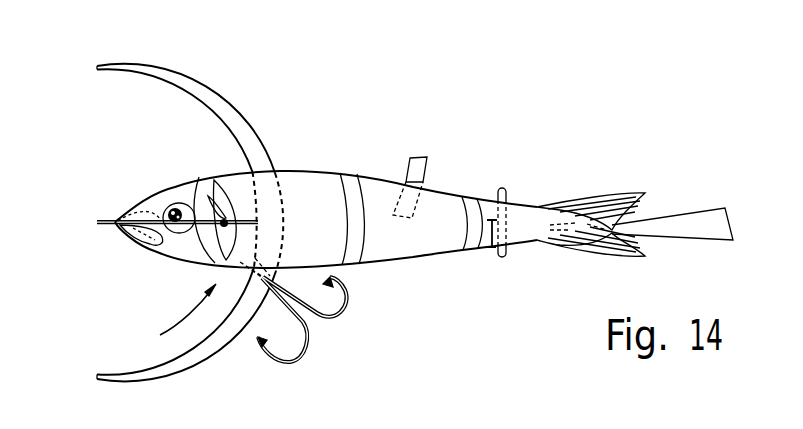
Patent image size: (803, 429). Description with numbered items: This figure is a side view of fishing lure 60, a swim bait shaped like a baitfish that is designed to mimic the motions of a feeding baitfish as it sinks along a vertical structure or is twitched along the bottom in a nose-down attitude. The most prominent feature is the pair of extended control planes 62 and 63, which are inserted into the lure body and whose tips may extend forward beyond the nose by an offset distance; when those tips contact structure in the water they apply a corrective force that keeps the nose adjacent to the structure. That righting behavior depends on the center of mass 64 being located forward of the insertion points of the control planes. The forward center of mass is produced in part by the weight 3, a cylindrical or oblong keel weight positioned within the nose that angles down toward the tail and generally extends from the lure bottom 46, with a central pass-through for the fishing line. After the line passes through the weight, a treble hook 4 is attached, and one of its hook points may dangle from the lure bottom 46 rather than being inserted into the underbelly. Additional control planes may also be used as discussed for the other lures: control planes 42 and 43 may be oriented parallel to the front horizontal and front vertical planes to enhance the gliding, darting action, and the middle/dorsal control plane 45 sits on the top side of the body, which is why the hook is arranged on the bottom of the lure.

The fishing lure 60 is at (376, 96).
The extended control plane 62 is at (252, 134).
The extended control plane 63 is at (101, 218).
The weight 3 is at (150, 241).
The center of mass 64 is at (222, 210).
The treble hook 4 is at (343, 306).
The lure bottom 46 is at (170, 320).
The middle/dorsal control plane 45 is at (420, 158).
The control plane 42 is at (492, 246).
The control plane 43 is at (504, 188).